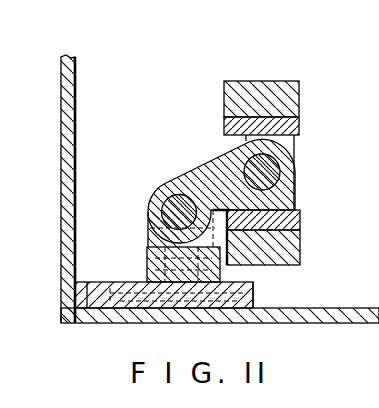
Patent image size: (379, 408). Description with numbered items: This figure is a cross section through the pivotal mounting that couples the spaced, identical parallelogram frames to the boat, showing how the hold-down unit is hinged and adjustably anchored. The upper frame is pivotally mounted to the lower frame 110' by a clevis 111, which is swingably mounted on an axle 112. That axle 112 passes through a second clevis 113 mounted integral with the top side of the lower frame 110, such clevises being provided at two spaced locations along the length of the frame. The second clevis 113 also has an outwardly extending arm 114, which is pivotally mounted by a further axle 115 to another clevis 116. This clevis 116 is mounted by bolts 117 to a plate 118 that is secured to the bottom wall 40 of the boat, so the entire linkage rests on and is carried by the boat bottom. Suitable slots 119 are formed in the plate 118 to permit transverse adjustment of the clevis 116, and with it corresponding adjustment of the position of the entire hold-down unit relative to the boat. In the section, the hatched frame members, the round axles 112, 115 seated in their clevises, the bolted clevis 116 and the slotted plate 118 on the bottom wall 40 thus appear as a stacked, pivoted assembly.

The bottom wall 40 is at (305, 313).
The lower frame 110 is at (287, 104).
The lower frame 110' is at (287, 237).
The clevis 111 is at (288, 142).
The axle 112 is at (268, 171).
The second clevis 113 is at (288, 202).
The outwardly extending arm 114 is at (187, 139).
The axle 115 is at (156, 164).
The clevis 116 is at (148, 248).
The bolts 117 is at (162, 272).
The plate 118 is at (87, 282).
The slots 119 is at (258, 283).